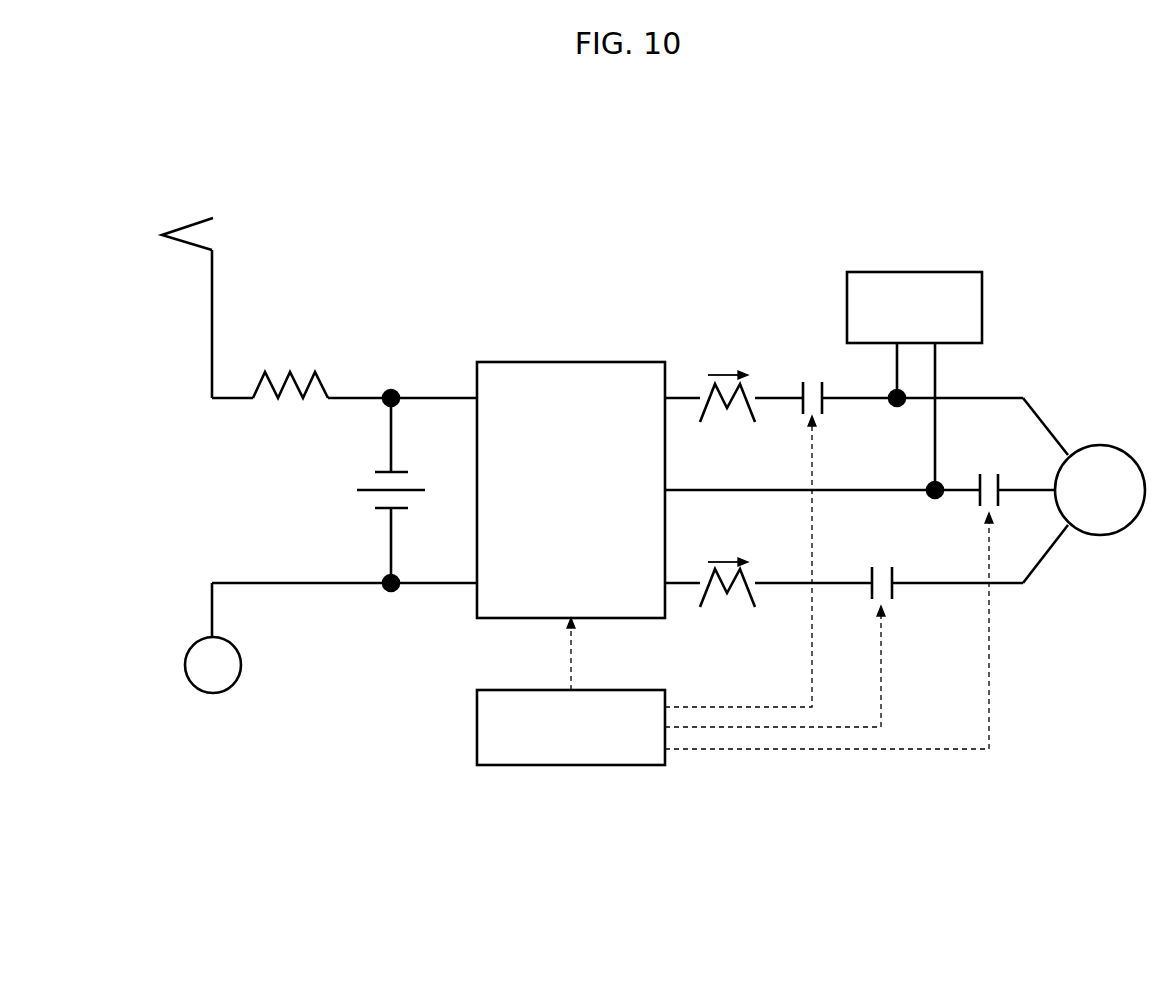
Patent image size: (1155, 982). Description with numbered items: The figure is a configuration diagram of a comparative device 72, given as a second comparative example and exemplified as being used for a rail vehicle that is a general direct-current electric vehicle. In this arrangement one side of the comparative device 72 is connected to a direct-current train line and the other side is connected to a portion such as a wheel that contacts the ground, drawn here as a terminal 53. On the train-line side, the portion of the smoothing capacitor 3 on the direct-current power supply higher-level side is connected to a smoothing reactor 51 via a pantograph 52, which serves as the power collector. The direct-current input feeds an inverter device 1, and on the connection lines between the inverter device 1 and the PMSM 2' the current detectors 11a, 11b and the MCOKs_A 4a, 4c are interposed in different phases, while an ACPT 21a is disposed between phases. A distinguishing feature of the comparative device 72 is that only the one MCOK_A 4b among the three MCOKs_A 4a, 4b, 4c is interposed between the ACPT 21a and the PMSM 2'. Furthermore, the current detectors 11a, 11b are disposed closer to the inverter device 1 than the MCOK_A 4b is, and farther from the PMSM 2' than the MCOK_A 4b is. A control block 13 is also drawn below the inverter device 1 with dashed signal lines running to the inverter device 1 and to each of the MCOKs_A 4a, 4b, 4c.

The comparative device 72 is at (609, 137).
The pantograph 52 is at (195, 218).
The smoothing reactor 51 is at (325, 368).
The smoothing capacitor 3 is at (347, 485).
The ground/power source terminal 53 is at (237, 651).
The inverter device 1 is at (565, 501).
The controller 13 is at (560, 741).
The current detector 11a is at (748, 387).
The current detector 11b is at (757, 590).
The MCOK_A 4a is at (813, 379).
The MCOK_A 4b is at (990, 472).
The MCOK_A 4c is at (880, 567).
The ACPT 21a is at (962, 318).
The PMSM 2' is at (1100, 490).